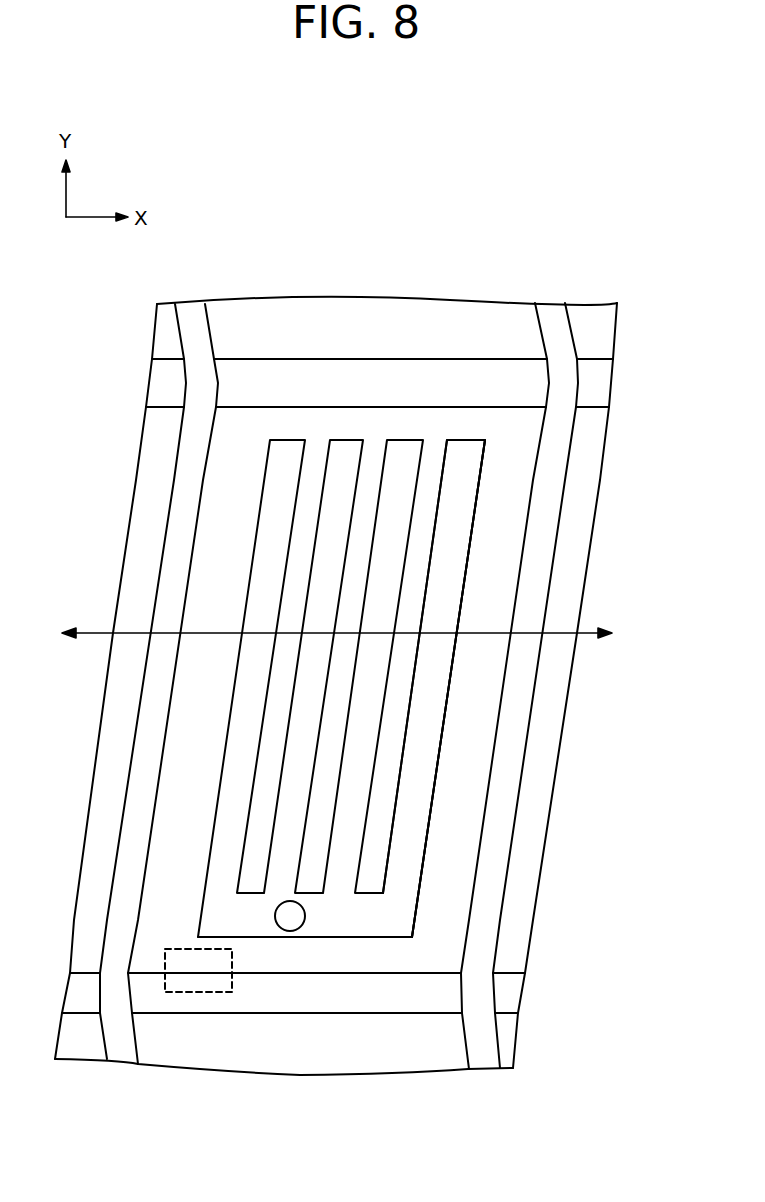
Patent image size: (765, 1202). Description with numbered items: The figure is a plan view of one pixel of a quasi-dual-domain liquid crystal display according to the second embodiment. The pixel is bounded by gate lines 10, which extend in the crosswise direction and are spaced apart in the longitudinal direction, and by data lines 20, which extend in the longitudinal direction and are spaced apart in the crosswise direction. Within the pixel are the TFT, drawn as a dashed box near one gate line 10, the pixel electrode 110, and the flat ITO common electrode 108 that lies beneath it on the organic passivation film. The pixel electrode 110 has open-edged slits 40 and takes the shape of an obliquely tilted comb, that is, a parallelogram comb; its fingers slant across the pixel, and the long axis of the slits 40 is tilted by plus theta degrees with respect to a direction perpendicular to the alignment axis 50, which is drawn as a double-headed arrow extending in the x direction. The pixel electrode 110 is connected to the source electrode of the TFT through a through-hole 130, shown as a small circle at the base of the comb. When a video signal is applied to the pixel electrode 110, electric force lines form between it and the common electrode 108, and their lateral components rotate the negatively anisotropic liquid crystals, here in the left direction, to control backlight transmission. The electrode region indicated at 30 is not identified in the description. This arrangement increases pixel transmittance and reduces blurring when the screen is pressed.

The gate line 10 is at (404, 999).
The data line 20 is at (483, 932).
The common electrode 30 is at (452, 748).
The slit 40 is at (412, 603).
The alignment axis 50 is at (90, 632).
The common electrode 108 is at (450, 900).
The pixel electrode 110 is at (435, 678).
The through-hole 130 is at (292, 920).
The thin film transistor TFT is at (197, 982).